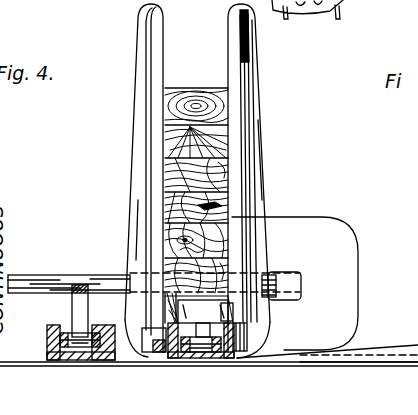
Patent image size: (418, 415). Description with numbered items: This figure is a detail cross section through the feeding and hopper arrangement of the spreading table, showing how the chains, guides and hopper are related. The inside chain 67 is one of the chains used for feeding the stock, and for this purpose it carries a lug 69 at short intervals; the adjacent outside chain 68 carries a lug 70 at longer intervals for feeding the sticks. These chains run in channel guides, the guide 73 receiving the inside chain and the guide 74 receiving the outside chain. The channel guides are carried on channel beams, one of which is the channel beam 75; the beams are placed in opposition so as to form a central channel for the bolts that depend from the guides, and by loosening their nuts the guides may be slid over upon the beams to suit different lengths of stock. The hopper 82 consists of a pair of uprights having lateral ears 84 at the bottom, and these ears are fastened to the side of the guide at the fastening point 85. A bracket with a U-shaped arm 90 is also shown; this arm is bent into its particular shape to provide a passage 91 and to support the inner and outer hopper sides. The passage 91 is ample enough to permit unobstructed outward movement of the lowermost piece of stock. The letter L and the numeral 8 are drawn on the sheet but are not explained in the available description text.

The ribbon or pointer 8 is at (216, 46).
The hopper 82 is at (163, 90).
The lug 69 is at (78, 305).
The channel guide 73 is at (55, 327).
The chain 67 is at (57, 343).
The fastening 85 is at (140, 334).
The lateral ear 84 is at (163, 340).
The chain 68 is at (190, 347).
The lug 70 is at (203, 318).
The channel guide 74 is at (223, 358).
The channel beam 75 is at (386, 380).
The U-shaped arm 90 is at (350, 300).
The passage 91 is at (299, 289).
The bar L is at (16, 276).